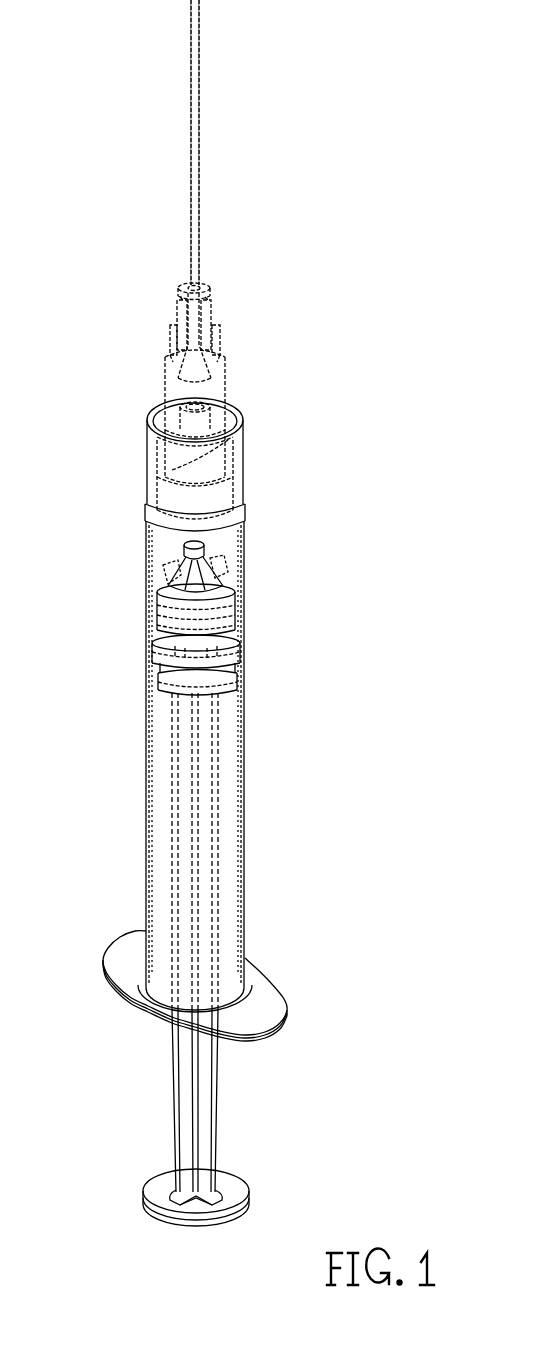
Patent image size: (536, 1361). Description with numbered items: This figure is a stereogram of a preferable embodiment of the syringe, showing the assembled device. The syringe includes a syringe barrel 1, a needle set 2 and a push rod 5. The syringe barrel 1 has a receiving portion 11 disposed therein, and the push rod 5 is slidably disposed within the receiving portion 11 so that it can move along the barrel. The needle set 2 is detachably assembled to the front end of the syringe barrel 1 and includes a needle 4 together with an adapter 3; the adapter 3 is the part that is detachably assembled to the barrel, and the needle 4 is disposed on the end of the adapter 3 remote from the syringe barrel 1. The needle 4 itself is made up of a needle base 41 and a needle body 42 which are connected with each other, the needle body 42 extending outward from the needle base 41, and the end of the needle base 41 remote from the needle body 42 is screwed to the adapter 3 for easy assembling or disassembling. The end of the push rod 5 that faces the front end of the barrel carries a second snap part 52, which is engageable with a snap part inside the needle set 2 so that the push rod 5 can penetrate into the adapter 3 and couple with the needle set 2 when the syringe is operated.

The syringe barrel 1 is at (243, 736).
The receiving portion 11 is at (235, 855).
The needle set 2 is at (238, 211).
The adapter 3 is at (222, 498).
The needle 4 is at (100, 183).
The needle base 41 is at (188, 322).
The needle body 42 is at (190, 204).
The push rod 5 is at (203, 784).
The second snap part 52 is at (226, 551).